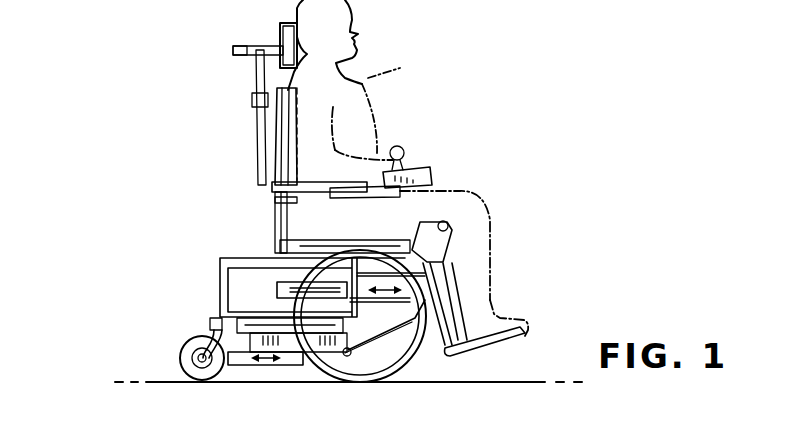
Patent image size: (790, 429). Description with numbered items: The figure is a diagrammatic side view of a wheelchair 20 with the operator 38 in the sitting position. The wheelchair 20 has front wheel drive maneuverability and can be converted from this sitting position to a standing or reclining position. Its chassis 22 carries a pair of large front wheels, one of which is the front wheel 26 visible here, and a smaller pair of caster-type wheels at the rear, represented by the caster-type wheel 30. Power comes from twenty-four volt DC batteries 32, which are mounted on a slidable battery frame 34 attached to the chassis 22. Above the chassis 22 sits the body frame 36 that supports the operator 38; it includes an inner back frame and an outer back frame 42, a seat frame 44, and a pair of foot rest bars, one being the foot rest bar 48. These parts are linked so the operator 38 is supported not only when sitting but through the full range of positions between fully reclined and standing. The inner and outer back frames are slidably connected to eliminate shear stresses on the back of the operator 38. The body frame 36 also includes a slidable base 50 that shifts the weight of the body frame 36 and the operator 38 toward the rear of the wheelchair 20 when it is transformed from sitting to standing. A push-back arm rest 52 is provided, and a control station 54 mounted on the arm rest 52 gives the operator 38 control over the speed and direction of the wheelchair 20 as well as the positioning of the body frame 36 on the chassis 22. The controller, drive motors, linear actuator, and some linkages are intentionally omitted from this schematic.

The wheelchair 20 is at (96, 232).
The chassis 22 is at (216, 280).
The front wheel 26 is at (395, 378).
The caster-type wheel 30 is at (180, 362).
The batteries 32 is at (210, 316).
The slidable battery frame 34 is at (262, 368).
The body frame 36 is at (246, 168).
The operator 38 is at (400, 68).
The outer back frame 42 is at (258, 128).
The seat frame 44 is at (432, 268).
The foot rest bar 48 is at (448, 355).
The slidable base 50 is at (285, 285).
The push-back arm rest 52 is at (342, 194).
The control station 54 is at (432, 166).